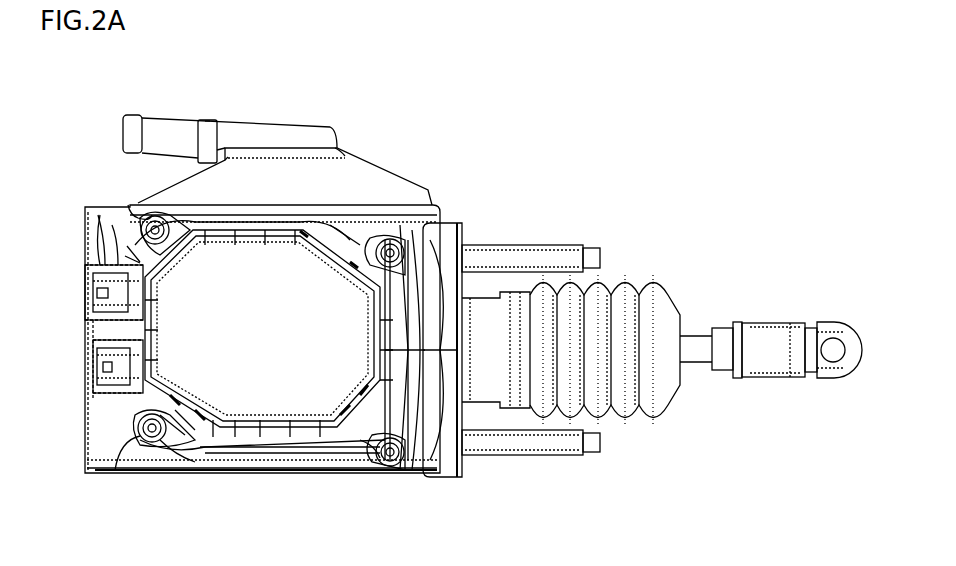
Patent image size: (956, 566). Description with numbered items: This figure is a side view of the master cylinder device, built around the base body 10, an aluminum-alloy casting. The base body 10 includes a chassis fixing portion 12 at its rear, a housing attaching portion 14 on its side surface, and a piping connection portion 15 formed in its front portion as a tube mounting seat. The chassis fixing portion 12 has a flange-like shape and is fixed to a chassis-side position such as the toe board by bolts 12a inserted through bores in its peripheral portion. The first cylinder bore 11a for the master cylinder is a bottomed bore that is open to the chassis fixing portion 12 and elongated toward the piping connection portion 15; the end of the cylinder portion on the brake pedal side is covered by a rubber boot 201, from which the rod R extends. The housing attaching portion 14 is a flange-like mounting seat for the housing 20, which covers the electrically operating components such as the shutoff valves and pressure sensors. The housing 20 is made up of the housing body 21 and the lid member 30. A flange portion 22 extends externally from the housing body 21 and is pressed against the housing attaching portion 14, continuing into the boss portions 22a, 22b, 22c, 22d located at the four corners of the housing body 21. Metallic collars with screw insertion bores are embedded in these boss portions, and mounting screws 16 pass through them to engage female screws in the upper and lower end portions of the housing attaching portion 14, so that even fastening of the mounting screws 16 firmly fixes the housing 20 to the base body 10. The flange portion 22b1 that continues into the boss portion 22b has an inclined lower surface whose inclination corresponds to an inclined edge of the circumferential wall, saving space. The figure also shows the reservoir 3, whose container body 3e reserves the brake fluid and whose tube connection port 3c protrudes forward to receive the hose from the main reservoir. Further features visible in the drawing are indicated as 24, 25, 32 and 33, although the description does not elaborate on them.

The base body 10 is at (85, 205).
The piping connection portion 15 is at (85, 436).
The housing attaching portion 14 is at (158, 462).
The connector 24 is at (85, 292).
The connector 25 is at (95, 366).
The reservoir 3 is at (351, 148).
The container body 3e is at (370, 168).
The tube connection port 3c is at (230, 120).
The housing 20 is at (243, 222).
The lid member 30 is at (302, 285).
The housing body 21 is at (246, 447).
The flange portion 22 is at (297, 453).
The boss portion 22a is at (128, 205).
The boss portion 22b is at (136, 440).
The flange portion 22b1 is at (185, 460).
The boss portion 22c is at (412, 466).
The boss portion 22d is at (402, 245).
The mounting screw 16 is at (156, 215).
The rib 32 is at (354, 232).
The rib 33 is at (150, 252).
The chassis fixing portion 12 is at (462, 230).
The bolt 12a is at (563, 248).
The first cylinder bore 11a is at (478, 385).
The rubber boot 201 is at (662, 282).
The rod R is at (698, 336).